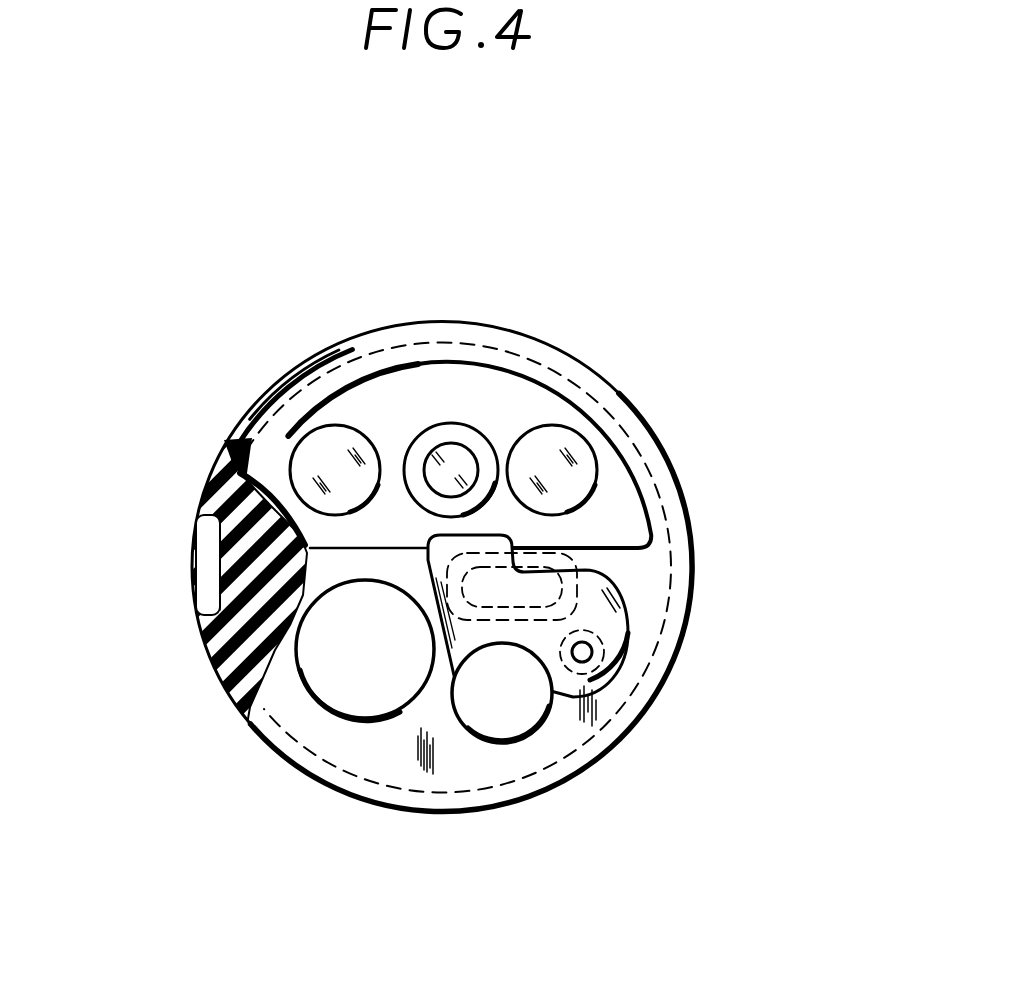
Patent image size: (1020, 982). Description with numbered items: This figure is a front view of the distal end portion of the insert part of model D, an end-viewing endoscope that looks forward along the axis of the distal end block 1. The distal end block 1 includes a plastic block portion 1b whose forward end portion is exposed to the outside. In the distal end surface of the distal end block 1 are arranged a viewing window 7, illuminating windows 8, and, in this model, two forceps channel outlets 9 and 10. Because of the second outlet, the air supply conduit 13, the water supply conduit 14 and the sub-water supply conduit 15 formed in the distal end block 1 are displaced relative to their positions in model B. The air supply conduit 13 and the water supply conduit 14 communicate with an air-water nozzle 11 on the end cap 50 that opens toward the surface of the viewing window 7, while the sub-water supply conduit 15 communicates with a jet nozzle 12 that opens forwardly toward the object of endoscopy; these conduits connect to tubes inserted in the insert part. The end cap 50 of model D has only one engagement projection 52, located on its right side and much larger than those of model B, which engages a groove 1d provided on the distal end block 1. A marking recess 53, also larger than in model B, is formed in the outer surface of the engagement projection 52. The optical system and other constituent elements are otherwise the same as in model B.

The distal end block 1 is at (652, 408).
The plastic block portion 1b is at (487, 380).
The groove 1d is at (250, 578).
The viewing window 7 is at (450, 452).
The illuminating windows 8 is at (322, 445).
The forceps channel outlet 9 is at (333, 703).
The forceps channel outlet 10 is at (513, 728).
The air-water nozzle 11 is at (458, 548).
The jet nozzle 12 is at (590, 662).
The air supply conduit 13 is at (500, 585).
The water supply conduit 14 is at (572, 586).
The sub-water supply conduit 15 is at (598, 628).
The end cap 50 is at (684, 646).
The engagement projection 52 is at (223, 567).
The marking recess 53 is at (208, 543).